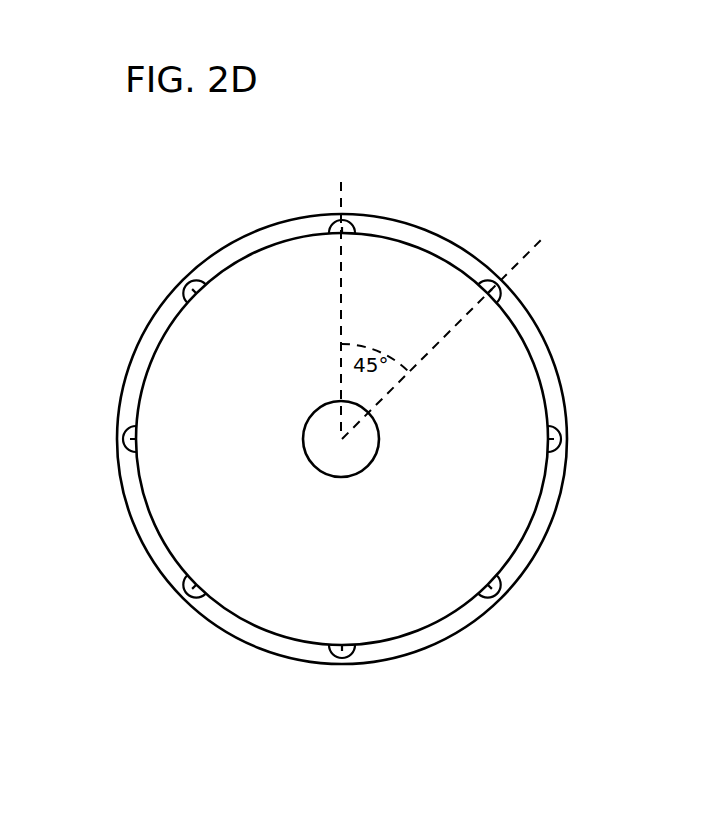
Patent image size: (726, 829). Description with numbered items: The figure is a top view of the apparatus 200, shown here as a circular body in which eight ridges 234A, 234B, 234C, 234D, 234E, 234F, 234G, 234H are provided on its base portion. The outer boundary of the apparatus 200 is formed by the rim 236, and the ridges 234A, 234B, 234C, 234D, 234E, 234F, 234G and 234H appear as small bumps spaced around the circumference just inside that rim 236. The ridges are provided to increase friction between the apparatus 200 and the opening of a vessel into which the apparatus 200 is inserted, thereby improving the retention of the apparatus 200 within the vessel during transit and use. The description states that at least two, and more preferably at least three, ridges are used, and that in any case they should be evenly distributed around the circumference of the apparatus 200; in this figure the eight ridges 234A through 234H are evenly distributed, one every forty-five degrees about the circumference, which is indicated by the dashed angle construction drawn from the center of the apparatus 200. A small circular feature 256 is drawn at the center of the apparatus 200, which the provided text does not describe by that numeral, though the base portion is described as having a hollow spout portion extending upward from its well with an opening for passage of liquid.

The apparatus 200 is at (497, 151).
The ridge 234A is at (352, 223).
The ridge 234B is at (505, 290).
The ridge 234C is at (565, 428).
The ridge 234D is at (508, 592).
The ridge 234E is at (343, 650).
The ridge 234F is at (177, 592).
The ridge 234G is at (125, 448).
The ridge 234H is at (180, 287).
The rim 236 is at (132, 422).
The central bore 256 is at (358, 449).